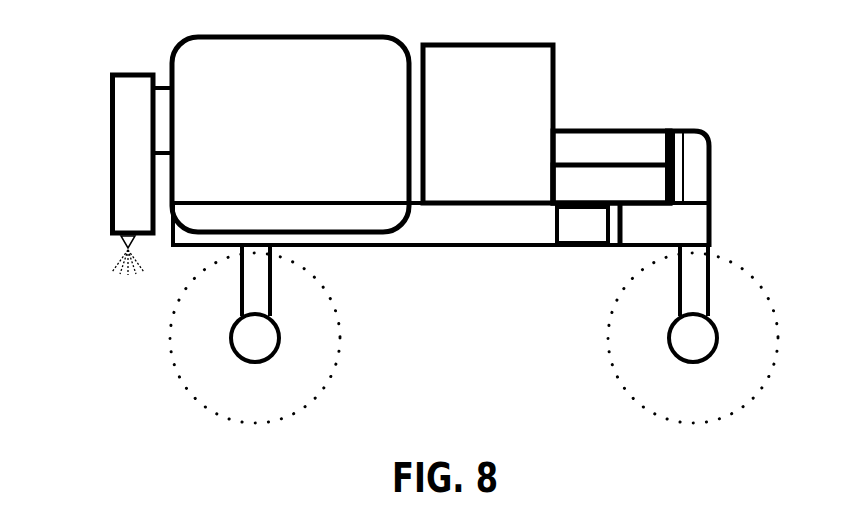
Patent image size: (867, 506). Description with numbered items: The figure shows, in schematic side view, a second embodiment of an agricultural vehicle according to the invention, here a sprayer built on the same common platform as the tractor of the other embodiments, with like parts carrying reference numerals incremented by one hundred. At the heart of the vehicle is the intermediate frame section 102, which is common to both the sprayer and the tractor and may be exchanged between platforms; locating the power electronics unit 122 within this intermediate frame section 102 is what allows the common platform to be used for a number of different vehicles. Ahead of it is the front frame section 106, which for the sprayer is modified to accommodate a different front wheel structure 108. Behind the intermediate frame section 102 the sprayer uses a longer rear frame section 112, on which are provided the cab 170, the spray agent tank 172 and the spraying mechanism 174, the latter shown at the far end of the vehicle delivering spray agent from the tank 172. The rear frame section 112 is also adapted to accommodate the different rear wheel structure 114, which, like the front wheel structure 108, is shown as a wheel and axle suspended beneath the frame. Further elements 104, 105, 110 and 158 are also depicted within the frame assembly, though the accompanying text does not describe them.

The intermediate frame section 102 is at (615, 230).
The compartment housing 104 is at (608, 145).
The lower compartment 105 is at (611, 212).
The front frame section 106 is at (693, 227).
The front wheel structure 108 is at (752, 342).
The panel / wall 110 is at (682, 142).
The rear frame section 112 is at (415, 230).
The rear wheel structure 114 is at (180, 363).
The power electronics unit 122 is at (582, 228).
The rear housing 158 is at (712, 158).
The cab 170 is at (502, 132).
The spray agent tank 172 is at (300, 132).
The spraying mechanism 174 is at (113, 137).